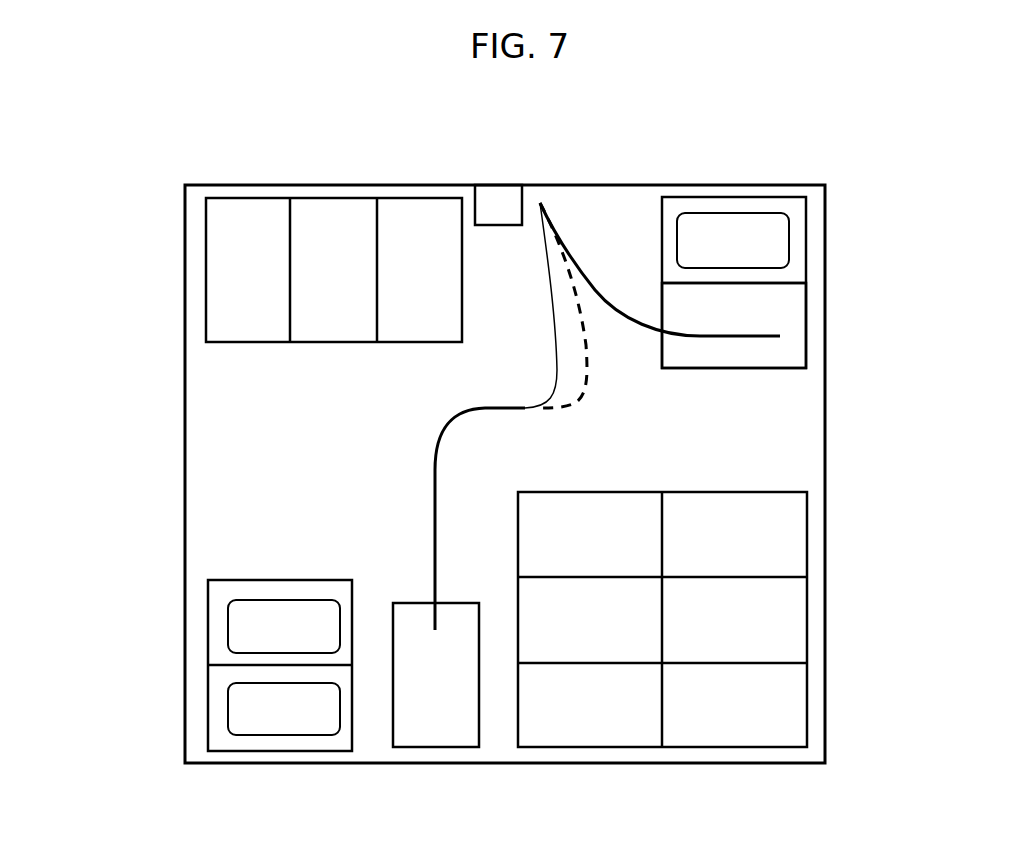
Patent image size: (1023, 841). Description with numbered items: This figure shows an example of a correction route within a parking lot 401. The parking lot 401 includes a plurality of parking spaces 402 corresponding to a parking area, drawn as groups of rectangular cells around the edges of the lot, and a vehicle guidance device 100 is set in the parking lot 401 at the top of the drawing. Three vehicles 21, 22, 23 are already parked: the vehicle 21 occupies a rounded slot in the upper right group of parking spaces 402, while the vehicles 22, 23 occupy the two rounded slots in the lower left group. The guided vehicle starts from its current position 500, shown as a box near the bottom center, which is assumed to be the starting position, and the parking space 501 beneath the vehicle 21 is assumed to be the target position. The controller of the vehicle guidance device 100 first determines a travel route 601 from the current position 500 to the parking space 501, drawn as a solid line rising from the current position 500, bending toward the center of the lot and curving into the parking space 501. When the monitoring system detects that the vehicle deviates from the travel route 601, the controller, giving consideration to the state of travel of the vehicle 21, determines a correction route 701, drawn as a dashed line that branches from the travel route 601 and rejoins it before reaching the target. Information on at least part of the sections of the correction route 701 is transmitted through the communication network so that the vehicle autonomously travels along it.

The parking lot 401 is at (643, 154).
The parking spaces 402 is at (418, 205).
The vehicle guidance device 100 is at (492, 186).
The vehicle 21 is at (789, 225).
The vehicle 22 is at (228, 613).
The vehicle 23 is at (280, 735).
The current position 500 is at (452, 603).
The parking space 501 is at (783, 307).
The travel route 601 is at (547, 393).
The correction route 701 is at (593, 395).